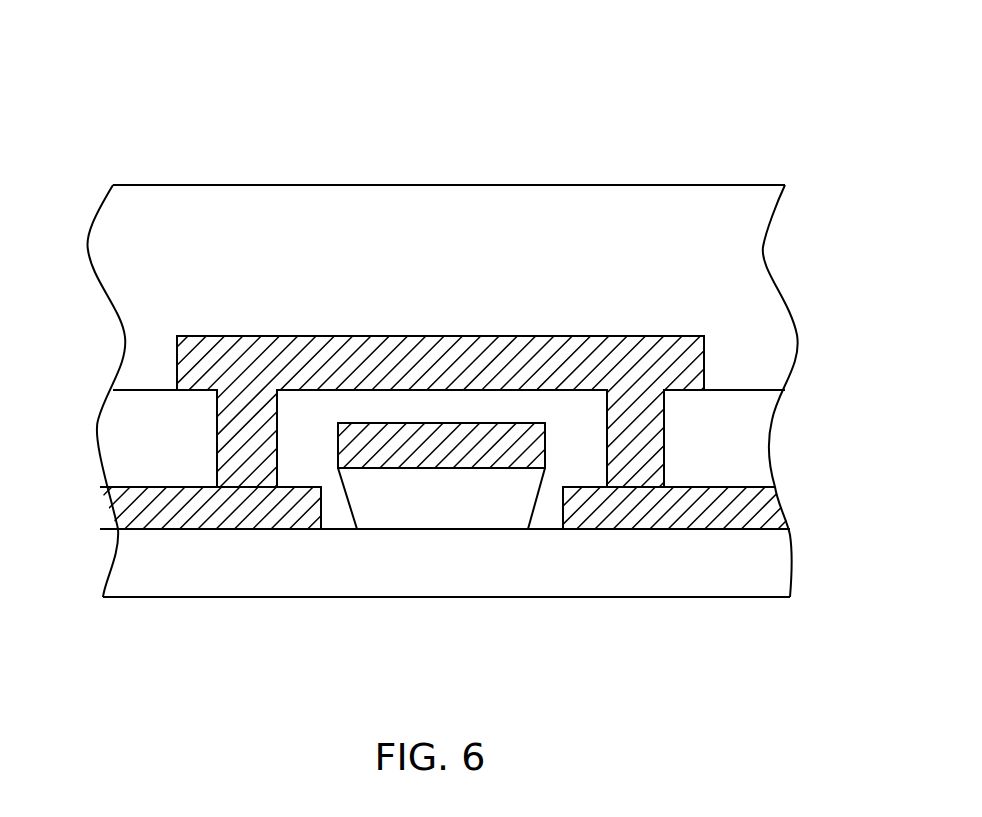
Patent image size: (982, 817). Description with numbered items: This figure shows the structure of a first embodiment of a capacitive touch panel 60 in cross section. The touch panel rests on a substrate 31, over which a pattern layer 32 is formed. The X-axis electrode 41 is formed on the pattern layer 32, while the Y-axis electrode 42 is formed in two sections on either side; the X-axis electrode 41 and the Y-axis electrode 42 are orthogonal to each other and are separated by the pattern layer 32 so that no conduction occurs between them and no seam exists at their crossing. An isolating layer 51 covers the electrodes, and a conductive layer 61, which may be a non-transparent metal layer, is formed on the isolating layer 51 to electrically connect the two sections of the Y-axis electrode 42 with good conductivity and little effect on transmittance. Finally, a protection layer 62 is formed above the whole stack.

The semiconductor device 60 is at (703, 127).
The protection layer 62 is at (437, 215).
The conductive layer 61 is at (332, 336).
The X-axis electrode 41 is at (448, 423).
The isolating layer 51 is at (153, 390).
The Y-axis electrode 42 is at (177, 510).
The pattern layer 32 is at (340, 512).
The substrate 31 is at (447, 587).